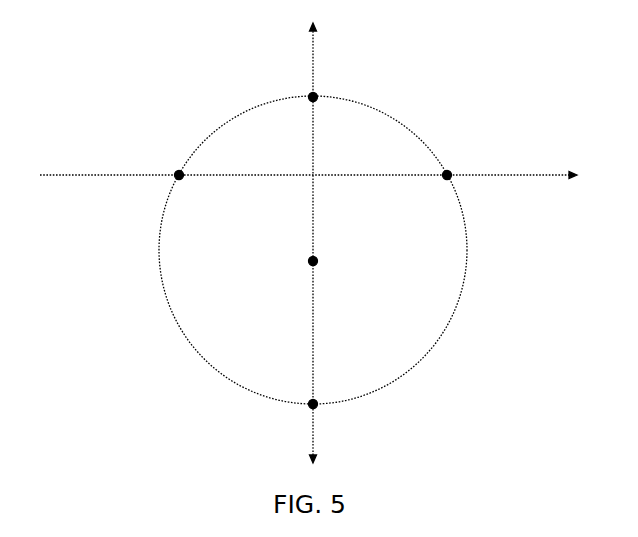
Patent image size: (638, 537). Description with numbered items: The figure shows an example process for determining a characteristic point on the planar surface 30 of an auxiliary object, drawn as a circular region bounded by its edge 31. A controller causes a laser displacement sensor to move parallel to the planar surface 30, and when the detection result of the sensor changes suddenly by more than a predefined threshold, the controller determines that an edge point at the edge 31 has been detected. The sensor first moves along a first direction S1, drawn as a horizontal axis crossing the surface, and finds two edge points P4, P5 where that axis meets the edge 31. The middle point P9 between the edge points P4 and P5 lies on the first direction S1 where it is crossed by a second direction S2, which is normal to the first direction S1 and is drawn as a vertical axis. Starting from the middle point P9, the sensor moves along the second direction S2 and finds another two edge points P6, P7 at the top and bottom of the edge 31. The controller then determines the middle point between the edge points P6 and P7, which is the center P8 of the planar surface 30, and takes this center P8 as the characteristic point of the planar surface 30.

The planar surface 30 is at (190, 266).
The edge 31 is at (161, 226).
The edge point P4 is at (172, 162).
The edge point P5 is at (456, 162).
The edge point P6 is at (330, 89).
The edge point P7 is at (330, 417).
The center of the planar surface P8 is at (330, 261).
The middle point P9 is at (328, 165).
The first direction S1 is at (308, 161).
The second direction S2 is at (298, 243).